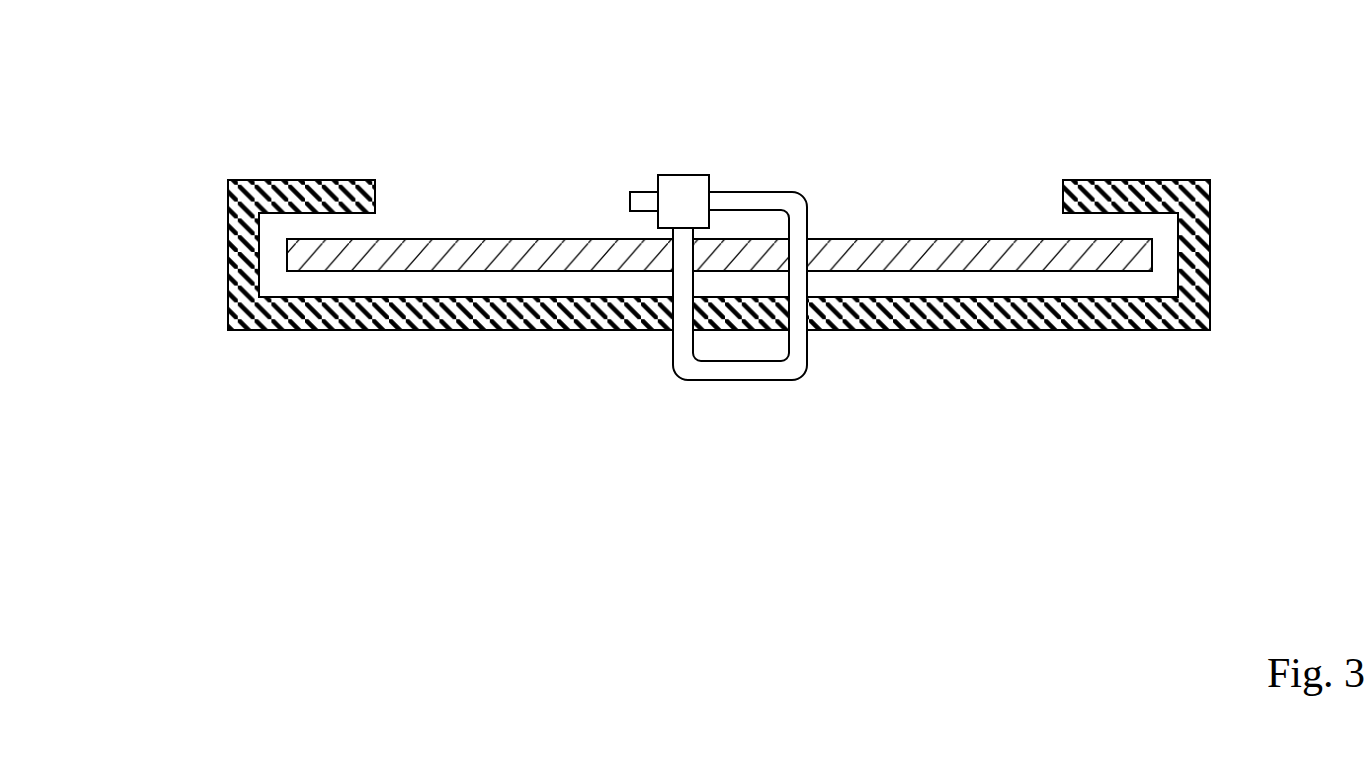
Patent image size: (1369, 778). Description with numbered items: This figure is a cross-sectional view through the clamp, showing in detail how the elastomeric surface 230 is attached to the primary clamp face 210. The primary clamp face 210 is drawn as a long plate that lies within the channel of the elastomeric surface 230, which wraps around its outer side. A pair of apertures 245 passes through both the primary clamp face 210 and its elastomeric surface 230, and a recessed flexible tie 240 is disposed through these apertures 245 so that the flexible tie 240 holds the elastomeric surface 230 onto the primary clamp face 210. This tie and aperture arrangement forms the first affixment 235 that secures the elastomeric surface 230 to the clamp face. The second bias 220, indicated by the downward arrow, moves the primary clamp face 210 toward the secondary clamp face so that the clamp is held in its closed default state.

The primary clamp face 210 is at (476, 239).
The second bias 220 is at (1032, 353).
The elastomeric surface 230 is at (228, 217).
The first affixment 235 is at (866, 92).
The flexible tie 240 is at (740, 380).
The apertures 245 is at (660, 313).